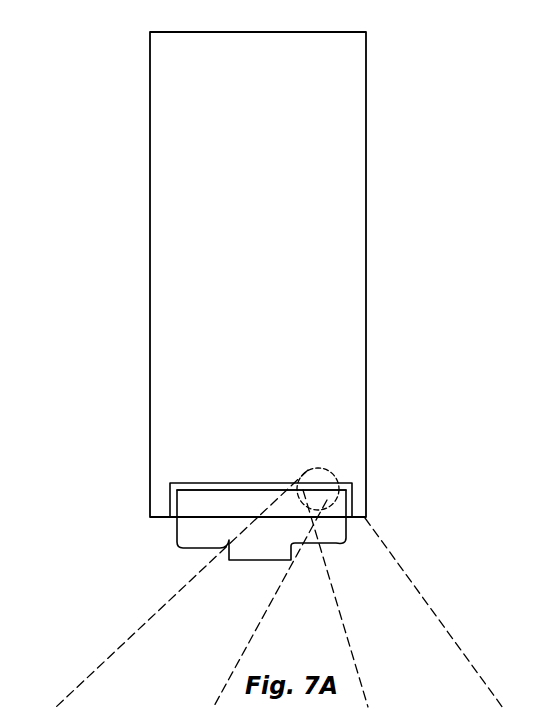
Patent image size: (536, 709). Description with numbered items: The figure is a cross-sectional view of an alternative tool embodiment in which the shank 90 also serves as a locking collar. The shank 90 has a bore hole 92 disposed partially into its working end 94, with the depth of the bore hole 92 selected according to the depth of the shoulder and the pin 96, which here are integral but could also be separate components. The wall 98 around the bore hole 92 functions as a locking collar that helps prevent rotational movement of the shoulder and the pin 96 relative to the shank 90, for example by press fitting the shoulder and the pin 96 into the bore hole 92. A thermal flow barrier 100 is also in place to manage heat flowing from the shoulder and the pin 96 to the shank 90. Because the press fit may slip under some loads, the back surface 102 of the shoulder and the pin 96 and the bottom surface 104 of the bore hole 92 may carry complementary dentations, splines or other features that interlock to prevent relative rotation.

The shank 90 is at (352, 221).
The bore hole 92 is at (357, 508).
The working end 94 is at (131, 485).
The shoulder and pin 96 is at (344, 549).
The wall 98 is at (147, 518).
The thermal flow barrier 100 is at (200, 512).
The back surface 102 is at (290, 488).
The bottom surface 104 is at (200, 512).